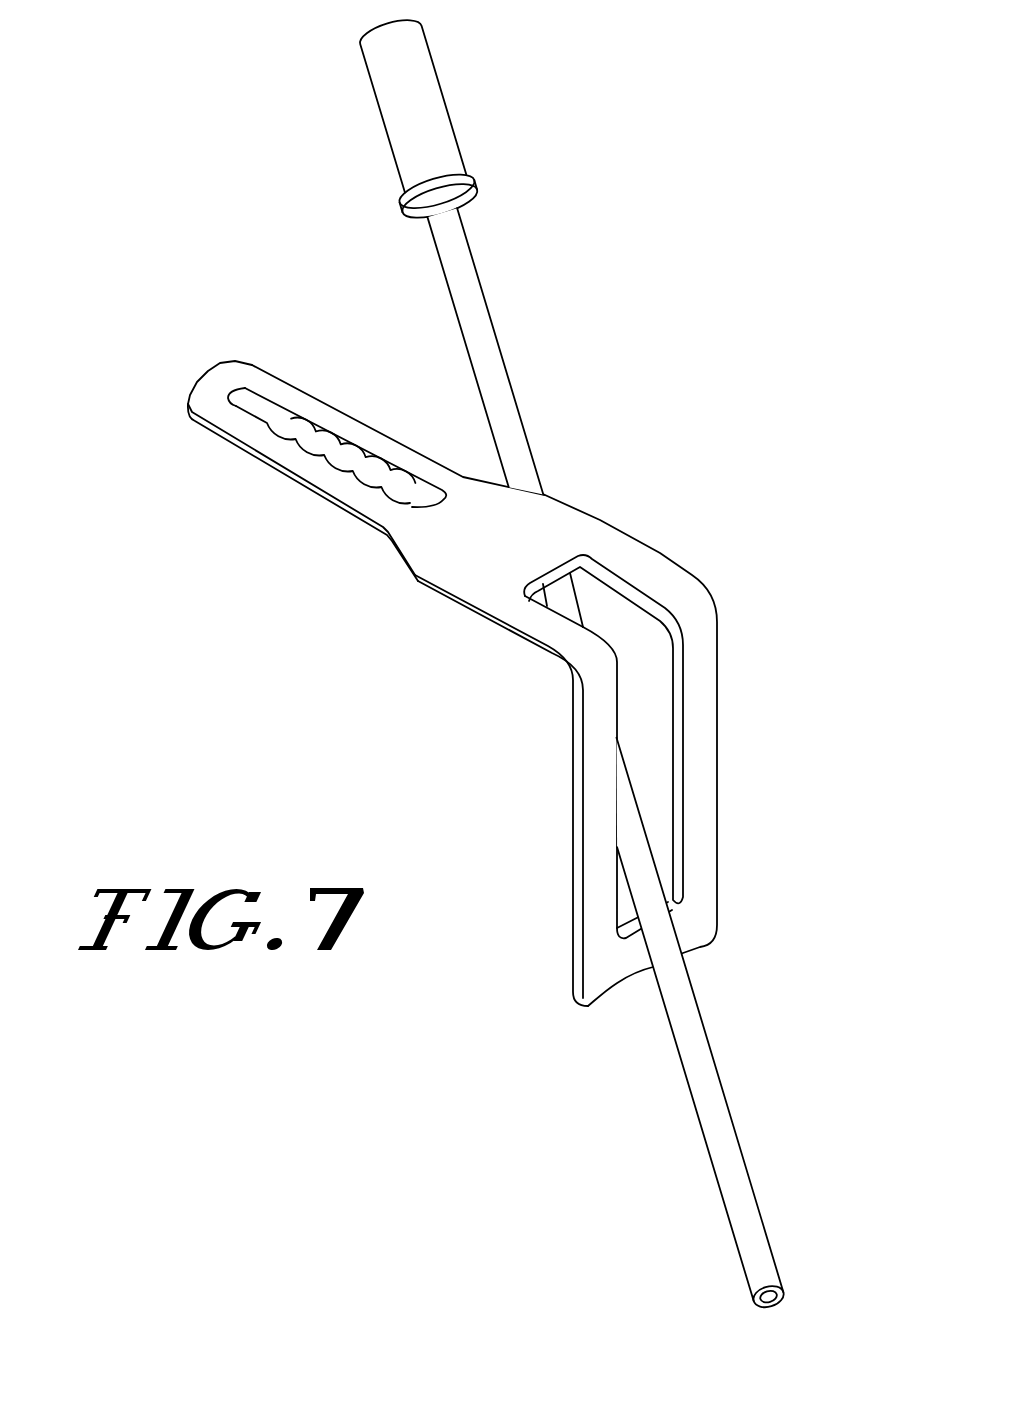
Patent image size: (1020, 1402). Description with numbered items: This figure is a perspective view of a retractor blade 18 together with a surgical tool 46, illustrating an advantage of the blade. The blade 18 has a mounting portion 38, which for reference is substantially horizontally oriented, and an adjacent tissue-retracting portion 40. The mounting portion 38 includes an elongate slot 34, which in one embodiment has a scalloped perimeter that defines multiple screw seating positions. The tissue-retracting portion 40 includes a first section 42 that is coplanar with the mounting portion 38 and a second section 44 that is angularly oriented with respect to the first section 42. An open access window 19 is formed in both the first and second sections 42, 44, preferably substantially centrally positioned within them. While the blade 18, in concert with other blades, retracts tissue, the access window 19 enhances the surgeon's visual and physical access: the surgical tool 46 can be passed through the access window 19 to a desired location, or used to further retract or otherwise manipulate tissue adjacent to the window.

The retractor blade 18 is at (278, 497).
The access window 19 is at (632, 622).
The elongate slot 34 is at (262, 408).
The mounting portion 38 is at (663, 503).
The tissue-retracting portion 40 is at (546, 1017).
The first section 42 is at (648, 513).
The second section 44 is at (747, 575).
The surgical tool 46 is at (472, 290).